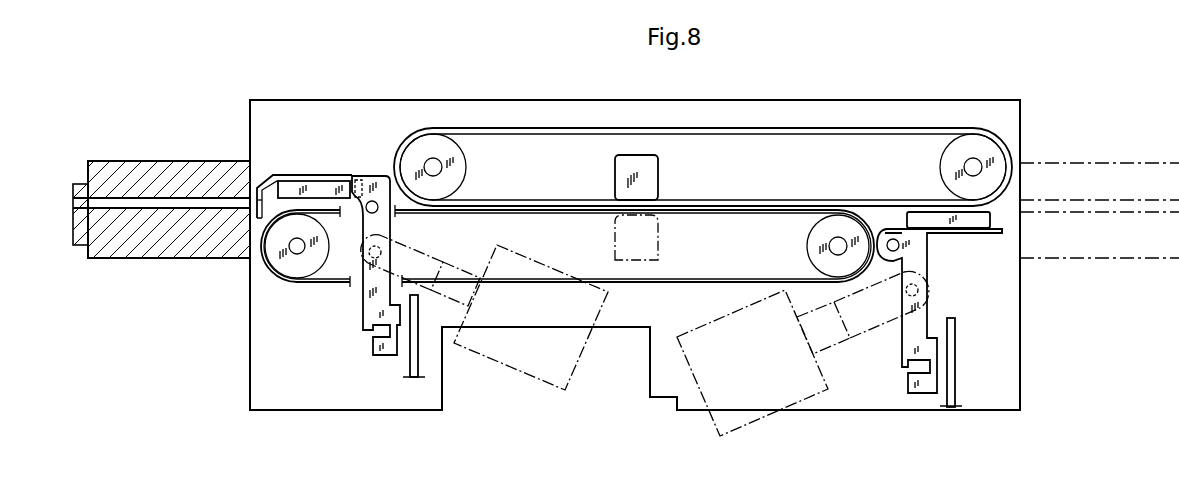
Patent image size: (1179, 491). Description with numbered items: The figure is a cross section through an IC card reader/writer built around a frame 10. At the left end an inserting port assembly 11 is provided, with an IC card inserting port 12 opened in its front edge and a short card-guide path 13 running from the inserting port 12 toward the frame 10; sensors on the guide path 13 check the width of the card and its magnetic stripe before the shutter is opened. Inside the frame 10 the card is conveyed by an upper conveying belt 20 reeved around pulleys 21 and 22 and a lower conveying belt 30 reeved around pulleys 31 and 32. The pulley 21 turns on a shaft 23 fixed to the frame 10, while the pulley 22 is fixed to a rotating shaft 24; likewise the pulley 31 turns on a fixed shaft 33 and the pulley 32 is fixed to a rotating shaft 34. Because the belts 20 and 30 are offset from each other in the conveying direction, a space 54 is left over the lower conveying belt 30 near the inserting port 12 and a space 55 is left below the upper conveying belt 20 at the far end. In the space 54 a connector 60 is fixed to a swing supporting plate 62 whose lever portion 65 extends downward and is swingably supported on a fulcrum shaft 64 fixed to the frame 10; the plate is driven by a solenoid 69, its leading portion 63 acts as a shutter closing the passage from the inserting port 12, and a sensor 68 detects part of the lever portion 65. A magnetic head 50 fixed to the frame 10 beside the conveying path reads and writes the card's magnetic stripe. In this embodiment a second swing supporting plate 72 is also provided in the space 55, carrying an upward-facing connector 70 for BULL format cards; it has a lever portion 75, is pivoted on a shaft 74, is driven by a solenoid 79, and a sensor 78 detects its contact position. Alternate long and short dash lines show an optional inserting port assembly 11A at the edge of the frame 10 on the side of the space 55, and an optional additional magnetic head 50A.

The frame 10 is at (1021, 140).
The inserting port assembly 11 is at (165, 162).
The inserting port assembly 11A is at (1082, 163).
The IC card inserting port 12 is at (78, 205).
The card-guide path 13 is at (207, 208).
The upper conveying belt 20 is at (578, 207).
The pulley 21 is at (947, 163).
The pulley 22 is at (443, 140).
The shaft 23 is at (982, 170).
The rotating shaft 24 is at (442, 168).
The lower conveying belt 30 is at (578, 214).
The pulley 31 is at (297, 272).
The pulley 32 is at (815, 250).
The shaft 33 is at (300, 250).
The rotating shaft 34 is at (817, 241).
The magnetic head 50 is at (660, 176).
The magnetic head 50A is at (660, 240).
The space 54 is at (358, 163).
The space 55 is at (930, 250).
The connector 60 is at (313, 190).
The swing supporting plate 62 is at (280, 172).
The leading portion 63 is at (255, 198).
The fulcrum shaft 64 is at (380, 212).
The lever portion 65 is at (368, 297).
The sensor 68 is at (397, 356).
The solenoid 69 is at (492, 362).
The connector 70 is at (930, 218).
The swing supporting plate 72 is at (971, 233).
The shaft 74 is at (905, 253).
The lever portion 75 is at (912, 322).
The sensor 78 is at (930, 395).
The solenoid 79 is at (812, 395).